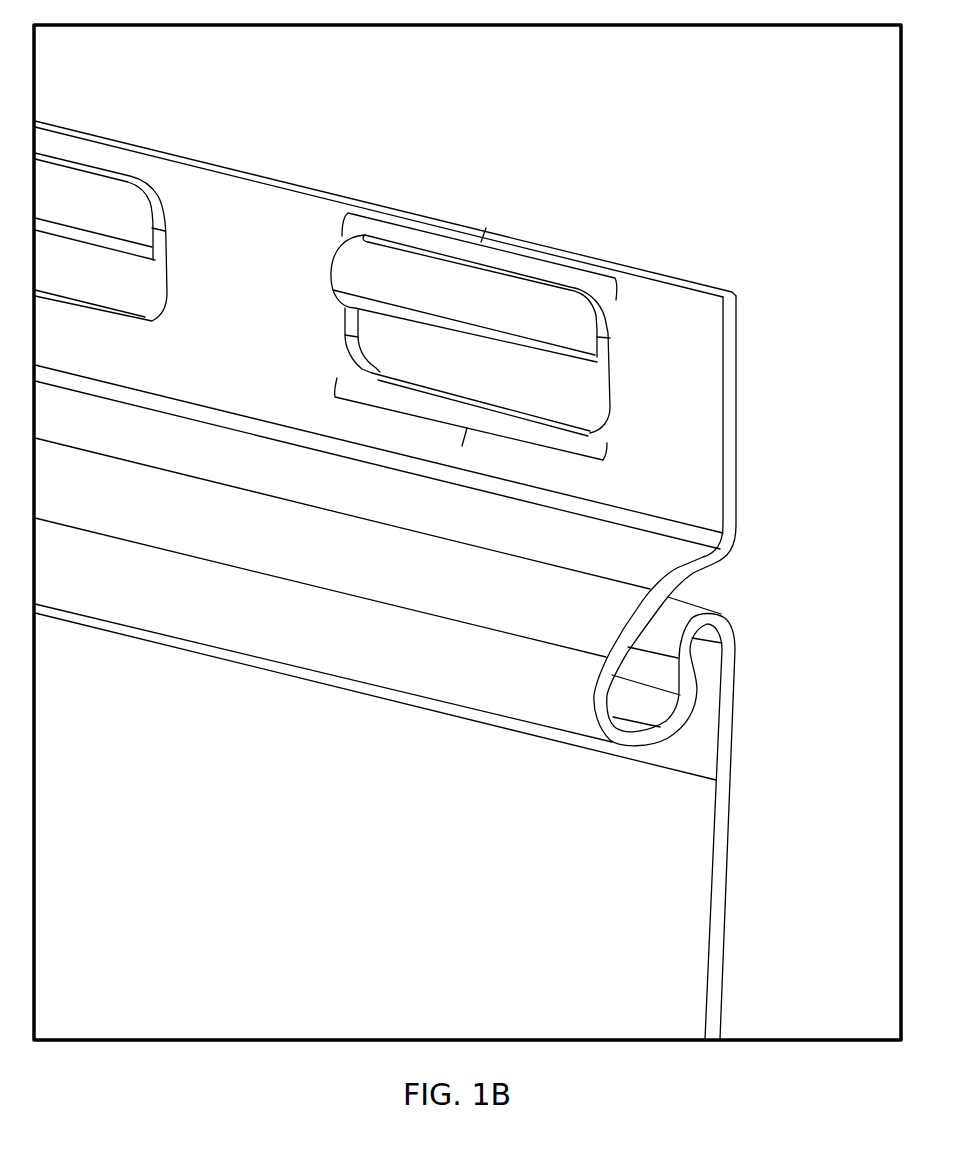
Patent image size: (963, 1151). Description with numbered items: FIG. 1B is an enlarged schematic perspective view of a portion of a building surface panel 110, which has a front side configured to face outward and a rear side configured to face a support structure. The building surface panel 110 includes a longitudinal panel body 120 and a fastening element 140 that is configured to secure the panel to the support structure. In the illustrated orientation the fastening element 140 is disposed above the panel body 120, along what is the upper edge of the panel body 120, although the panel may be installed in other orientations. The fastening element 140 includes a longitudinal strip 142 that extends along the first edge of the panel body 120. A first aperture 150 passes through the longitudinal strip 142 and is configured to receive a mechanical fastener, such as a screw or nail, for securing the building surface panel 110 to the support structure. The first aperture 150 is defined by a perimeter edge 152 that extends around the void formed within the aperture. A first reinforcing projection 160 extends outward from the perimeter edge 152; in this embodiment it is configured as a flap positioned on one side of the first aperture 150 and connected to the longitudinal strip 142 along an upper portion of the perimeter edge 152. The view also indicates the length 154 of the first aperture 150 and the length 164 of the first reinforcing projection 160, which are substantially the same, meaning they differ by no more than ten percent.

The building surface panel 110 is at (674, 164).
The longitudinal panel body 120 is at (330, 851).
The fastening element 140 is at (768, 441).
The longitudinal strip 142 is at (268, 270).
The first aperture 150 is at (416, 372).
The perimeter edge 152 is at (352, 353).
The length of first aperture 154 is at (471, 430).
The first reinforcing projection 160 is at (488, 305).
The length of first reinforcement projection 164 is at (479, 248).